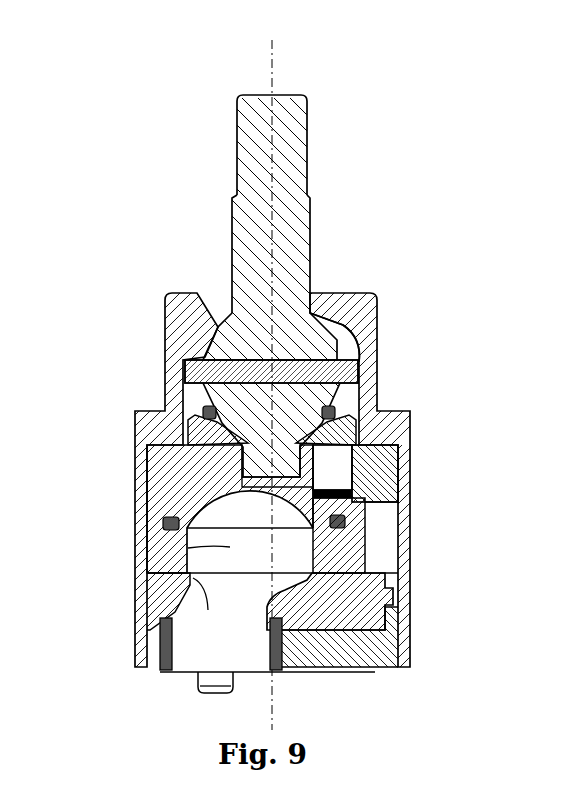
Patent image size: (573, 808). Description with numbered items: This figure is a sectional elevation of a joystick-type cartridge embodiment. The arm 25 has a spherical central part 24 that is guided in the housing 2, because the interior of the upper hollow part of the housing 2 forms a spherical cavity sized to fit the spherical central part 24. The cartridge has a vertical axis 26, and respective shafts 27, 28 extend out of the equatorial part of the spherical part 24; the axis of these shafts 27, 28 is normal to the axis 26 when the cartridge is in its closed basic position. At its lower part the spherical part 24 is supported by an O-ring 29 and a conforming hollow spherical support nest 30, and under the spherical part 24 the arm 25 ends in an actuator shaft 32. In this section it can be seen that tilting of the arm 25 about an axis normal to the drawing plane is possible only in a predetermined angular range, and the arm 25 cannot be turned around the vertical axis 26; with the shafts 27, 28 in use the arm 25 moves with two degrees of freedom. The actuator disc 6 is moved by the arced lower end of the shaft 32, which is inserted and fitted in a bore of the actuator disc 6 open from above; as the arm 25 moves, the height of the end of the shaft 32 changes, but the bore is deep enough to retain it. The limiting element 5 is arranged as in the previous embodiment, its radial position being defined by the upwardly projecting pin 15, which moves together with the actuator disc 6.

The housing 2 is at (183, 303).
The limiting element 5 is at (382, 472).
The actuator disc 6 is at (165, 488).
The pin 15 is at (412, 435).
The spherical central part 24 is at (300, 335).
The arm 25 is at (292, 117).
The vertical axis 26 is at (277, 55).
The shaft 27 is at (184, 362).
The shaft 28 is at (362, 366).
The O-ring 29 is at (337, 417).
The hollow spherical support nest 30 is at (350, 430).
The actuator shaft 32 is at (258, 457).